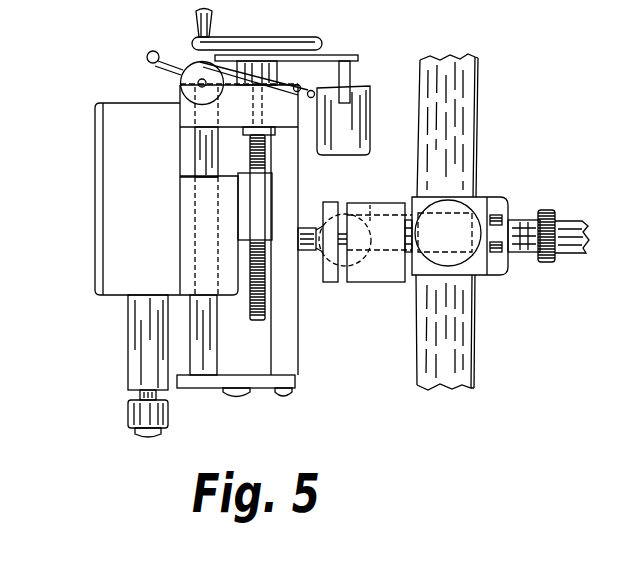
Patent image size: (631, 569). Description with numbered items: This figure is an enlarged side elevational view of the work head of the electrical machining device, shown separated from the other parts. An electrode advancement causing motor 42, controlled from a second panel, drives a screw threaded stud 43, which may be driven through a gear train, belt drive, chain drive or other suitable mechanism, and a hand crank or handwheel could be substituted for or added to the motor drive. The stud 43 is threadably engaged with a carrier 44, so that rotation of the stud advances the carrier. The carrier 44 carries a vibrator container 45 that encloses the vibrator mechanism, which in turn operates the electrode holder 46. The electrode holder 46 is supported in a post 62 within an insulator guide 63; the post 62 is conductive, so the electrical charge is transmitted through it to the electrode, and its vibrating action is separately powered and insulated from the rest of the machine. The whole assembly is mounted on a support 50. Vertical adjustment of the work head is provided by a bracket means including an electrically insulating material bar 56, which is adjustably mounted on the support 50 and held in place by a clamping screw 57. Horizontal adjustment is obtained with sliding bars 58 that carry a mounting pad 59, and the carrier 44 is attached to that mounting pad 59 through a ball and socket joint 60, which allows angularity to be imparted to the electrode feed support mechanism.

The electrode advancement causing motor 42 is at (356, 120).
The screw threaded stud 43 is at (248, 305).
The carrier 44 is at (232, 208).
The vibrator container 45 is at (125, 170).
The electrode holder 46 is at (168, 418).
The support 50 is at (465, 340).
The electrically insulating material bar 56 is at (480, 210).
The clamping screw 57 is at (545, 259).
The sliding bars 58 is at (582, 255).
The mounting pad 59 is at (390, 278).
The ball and socket joint 60 is at (343, 266).
The post 62 is at (140, 394).
The insulator guide 63 is at (145, 330).